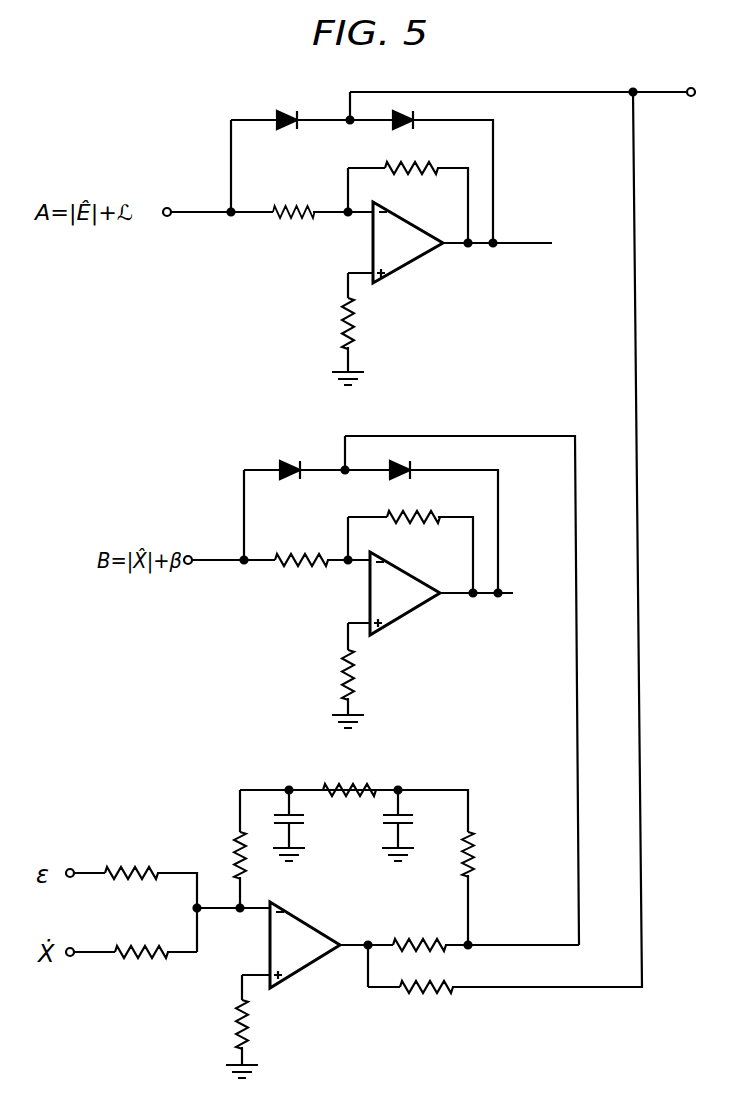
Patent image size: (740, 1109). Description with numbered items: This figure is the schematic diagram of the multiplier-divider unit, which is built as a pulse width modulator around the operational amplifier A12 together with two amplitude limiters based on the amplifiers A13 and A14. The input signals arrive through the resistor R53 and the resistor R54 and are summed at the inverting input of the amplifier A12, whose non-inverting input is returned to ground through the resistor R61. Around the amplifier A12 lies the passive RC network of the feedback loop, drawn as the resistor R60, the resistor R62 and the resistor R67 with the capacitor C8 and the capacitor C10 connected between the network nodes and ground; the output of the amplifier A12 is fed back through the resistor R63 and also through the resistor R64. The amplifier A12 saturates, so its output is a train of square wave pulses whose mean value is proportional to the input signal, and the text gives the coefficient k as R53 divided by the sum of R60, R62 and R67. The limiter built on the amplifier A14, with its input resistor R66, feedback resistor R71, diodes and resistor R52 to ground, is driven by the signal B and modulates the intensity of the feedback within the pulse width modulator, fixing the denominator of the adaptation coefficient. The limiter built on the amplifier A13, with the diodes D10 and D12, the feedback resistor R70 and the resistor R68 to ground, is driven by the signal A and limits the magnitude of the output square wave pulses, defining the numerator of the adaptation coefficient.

The diode D10 is at (284, 129).
The diode D12 is at (400, 129).
The feedback resistor R70 is at (397, 172).
The amplifier A13 is at (408, 242).
The resistor R68 is at (351, 330).
The input resistor R66 is at (283, 564).
The feedback resistor R71 is at (400, 521).
The amplifier A14 is at (405, 593).
The resistor R52 is at (352, 672).
The resistor R53 is at (140, 868).
The input resistor R54 is at (140, 958).
The resistor R60 is at (236, 842).
The resistor R62 is at (362, 786).
The capacitor C8 is at (305, 819).
The capacitor C10 is at (414, 819).
The resistor R67 is at (473, 862).
The resistor R63 is at (428, 937).
The amplifier A12 is at (305, 945).
The resistor R61 is at (239, 1024).
The resistor R64 is at (402, 992).